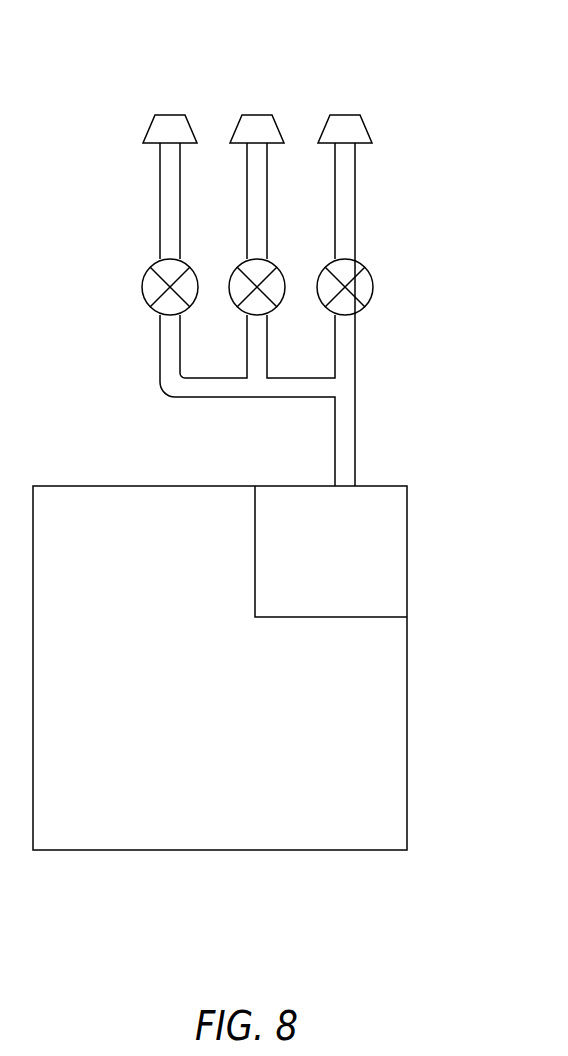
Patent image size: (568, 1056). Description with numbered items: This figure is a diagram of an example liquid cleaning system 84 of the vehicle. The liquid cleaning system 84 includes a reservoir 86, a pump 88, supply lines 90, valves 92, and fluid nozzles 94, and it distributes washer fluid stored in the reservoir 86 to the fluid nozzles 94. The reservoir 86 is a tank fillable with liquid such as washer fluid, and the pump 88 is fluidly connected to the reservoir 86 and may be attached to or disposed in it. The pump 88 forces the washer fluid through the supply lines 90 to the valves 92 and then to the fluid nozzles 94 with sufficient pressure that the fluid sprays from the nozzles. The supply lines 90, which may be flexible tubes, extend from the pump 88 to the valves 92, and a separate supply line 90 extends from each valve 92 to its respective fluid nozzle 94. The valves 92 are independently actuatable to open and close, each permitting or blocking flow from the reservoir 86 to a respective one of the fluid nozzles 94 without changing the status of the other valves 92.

The liquid cleaning system 84 is at (430, 409).
The reservoir 86 is at (407, 788).
The pump 88 is at (407, 528).
The supply lines 90 is at (180, 164).
The valves 92 is at (330, 262).
The fluid nozzles 94 is at (343, 113).